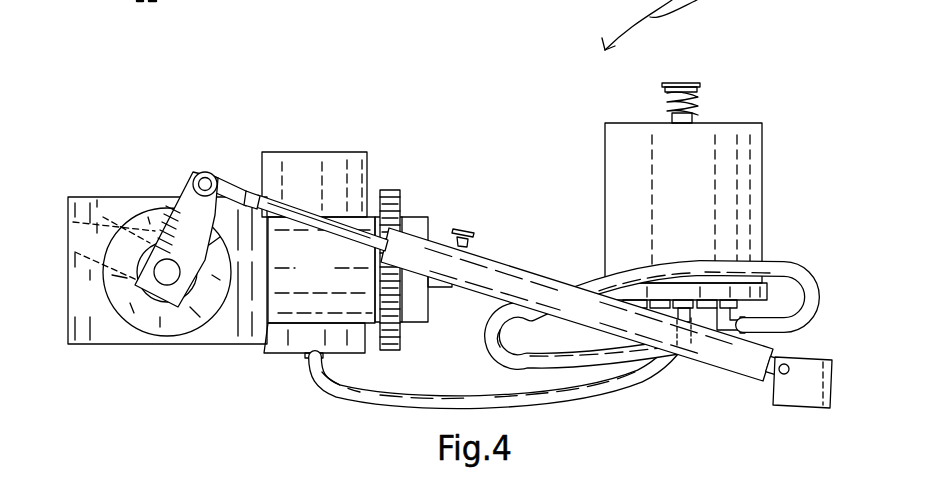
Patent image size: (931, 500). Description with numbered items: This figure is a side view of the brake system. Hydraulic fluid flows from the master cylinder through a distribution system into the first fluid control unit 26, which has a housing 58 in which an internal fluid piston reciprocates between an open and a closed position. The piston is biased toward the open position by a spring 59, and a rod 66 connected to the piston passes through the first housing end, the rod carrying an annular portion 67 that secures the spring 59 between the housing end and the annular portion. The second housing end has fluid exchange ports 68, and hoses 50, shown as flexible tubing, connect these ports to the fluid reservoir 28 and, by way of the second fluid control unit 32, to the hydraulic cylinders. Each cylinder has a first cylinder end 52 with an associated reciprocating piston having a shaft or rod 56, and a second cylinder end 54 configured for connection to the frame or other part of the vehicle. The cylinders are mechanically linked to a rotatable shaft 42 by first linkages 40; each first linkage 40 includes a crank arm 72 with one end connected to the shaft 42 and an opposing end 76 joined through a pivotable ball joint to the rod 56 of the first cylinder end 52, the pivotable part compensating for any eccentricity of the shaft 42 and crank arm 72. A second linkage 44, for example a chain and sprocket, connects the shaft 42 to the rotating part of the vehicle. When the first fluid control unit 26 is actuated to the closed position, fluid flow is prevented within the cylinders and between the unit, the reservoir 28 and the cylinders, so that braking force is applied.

The first fluid control unit 26 is at (760, 128).
The fluid reservoir 28 is at (337, 157).
The second fluid control unit 32 is at (470, 235).
The first linkage 40 is at (199, 157).
The rotatable shaft 42 is at (172, 276).
The second linkage 44 is at (397, 207).
The hoses 50 is at (607, 390).
The first cylinder end 52 is at (235, 180).
The second cylinder end 54 is at (763, 377).
The shaft or rod 56 is at (347, 230).
The housing 58 is at (762, 180).
The spring 59 is at (667, 107).
The rod 66 is at (700, 113).
The annular portion 67 is at (677, 83).
The fluid exchange ports 68 is at (690, 312).
The crank arm 72 is at (103, 216).
The opposing end 76 is at (172, 226).